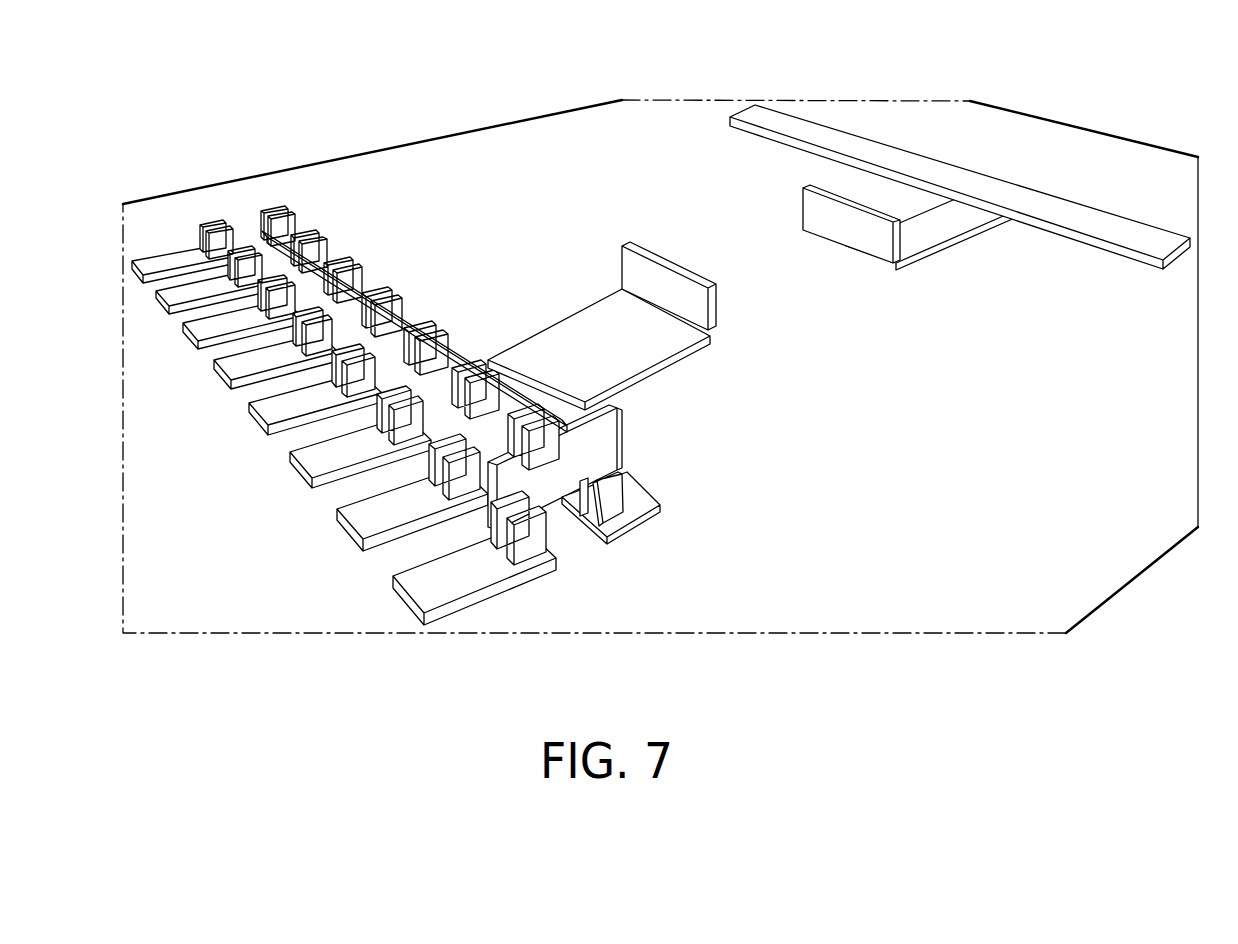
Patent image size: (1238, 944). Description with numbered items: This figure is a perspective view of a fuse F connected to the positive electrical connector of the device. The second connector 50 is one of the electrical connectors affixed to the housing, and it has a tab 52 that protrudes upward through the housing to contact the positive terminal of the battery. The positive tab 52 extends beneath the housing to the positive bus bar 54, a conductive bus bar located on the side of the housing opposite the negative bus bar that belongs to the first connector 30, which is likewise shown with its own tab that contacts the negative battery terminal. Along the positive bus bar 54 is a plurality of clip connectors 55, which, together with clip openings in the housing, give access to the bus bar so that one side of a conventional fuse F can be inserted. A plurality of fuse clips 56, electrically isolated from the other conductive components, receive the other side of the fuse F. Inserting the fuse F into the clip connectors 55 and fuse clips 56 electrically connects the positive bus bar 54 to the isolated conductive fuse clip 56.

The clip connectors 55 is at (335, 252).
The fuse clips 56 is at (433, 340).
The positive bus bar 54 is at (448, 355).
The second connector 50 is at (578, 352).
The tab 52 is at (668, 292).
The fuse F is at (552, 462).
The first connector 30 is at (920, 230).